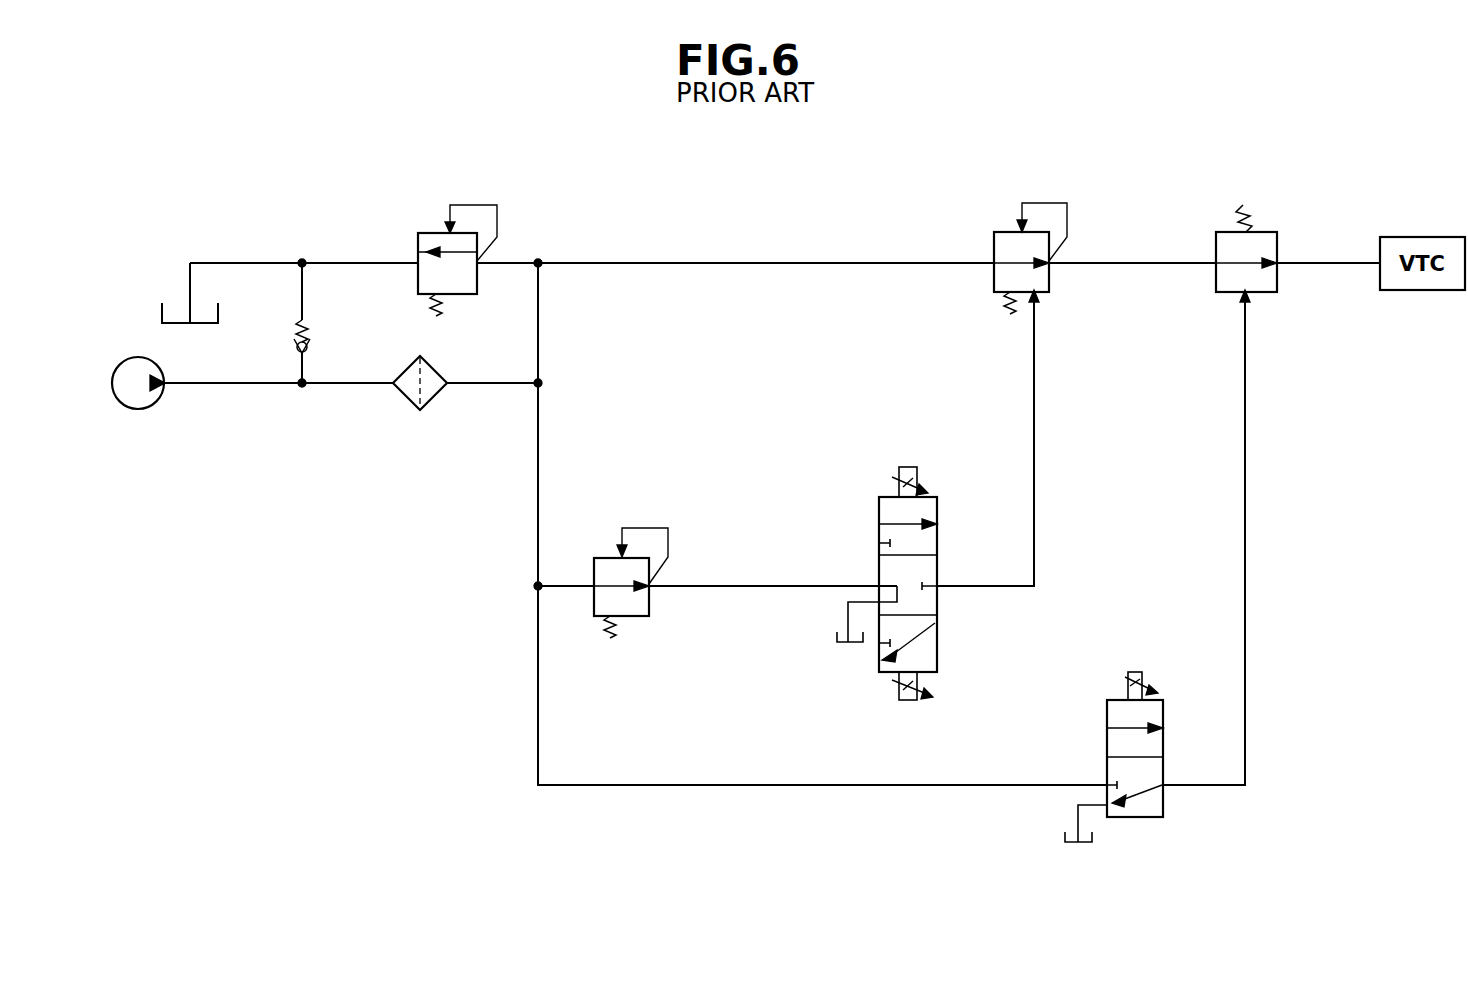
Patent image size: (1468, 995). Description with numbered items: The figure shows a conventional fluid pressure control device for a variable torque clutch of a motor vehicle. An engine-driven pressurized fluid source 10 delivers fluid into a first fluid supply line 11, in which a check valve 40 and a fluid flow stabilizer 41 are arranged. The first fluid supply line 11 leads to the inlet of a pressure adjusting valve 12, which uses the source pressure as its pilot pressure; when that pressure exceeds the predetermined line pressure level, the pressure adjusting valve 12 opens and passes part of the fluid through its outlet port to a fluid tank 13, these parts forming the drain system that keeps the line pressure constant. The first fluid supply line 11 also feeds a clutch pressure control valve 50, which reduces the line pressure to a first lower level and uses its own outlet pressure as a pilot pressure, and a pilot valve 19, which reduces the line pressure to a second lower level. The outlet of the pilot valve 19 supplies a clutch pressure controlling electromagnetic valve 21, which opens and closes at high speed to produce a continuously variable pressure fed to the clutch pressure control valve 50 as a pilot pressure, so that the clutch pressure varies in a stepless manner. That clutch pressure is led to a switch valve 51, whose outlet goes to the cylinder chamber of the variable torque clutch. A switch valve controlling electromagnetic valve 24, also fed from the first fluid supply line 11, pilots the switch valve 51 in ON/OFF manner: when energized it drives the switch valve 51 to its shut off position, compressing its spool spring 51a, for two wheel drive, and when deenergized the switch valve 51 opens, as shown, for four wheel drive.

The pressurized fluid source 10 is at (148, 410).
The first fluid supply line 11 is at (482, 386).
The pressure adjusting valve 12 is at (434, 245).
The fluid tank 13 is at (177, 315).
The pilot valve 19 is at (632, 606).
The clutch pressure controlling electromagnetic valve 21 is at (925, 630).
The switch valve controlling electromagnetic valve 24 is at (1150, 795).
The check valve 40 is at (314, 333).
The fluid flow stabilizer 41 is at (400, 402).
The clutch pressure control valve 50 is at (1004, 222).
The switch valve 51 is at (1254, 222).
The spool spring 51a is at (1243, 207).